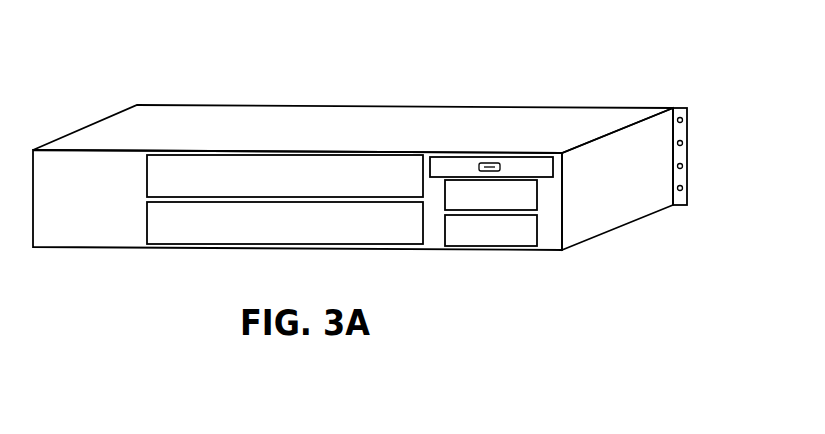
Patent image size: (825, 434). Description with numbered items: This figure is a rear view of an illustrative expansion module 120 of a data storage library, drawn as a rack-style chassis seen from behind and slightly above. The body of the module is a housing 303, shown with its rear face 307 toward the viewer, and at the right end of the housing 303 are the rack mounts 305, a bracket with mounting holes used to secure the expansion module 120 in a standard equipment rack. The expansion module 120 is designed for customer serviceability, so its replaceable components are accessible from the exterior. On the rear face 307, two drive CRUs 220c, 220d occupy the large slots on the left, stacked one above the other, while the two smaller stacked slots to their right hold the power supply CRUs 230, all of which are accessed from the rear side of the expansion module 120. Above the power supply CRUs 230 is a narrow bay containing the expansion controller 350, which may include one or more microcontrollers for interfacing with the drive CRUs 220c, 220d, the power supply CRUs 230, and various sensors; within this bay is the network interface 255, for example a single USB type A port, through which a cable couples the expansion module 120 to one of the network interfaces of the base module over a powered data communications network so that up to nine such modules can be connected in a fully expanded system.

The expansion module 120 is at (628, 68).
The housing 303 is at (113, 117).
The rear face 307 is at (98, 234).
The rack mounts 305 is at (755, 225).
The drive CRU 220c is at (353, 186).
The drive CRU 220d is at (353, 233).
The network interface 255 is at (481, 164).
The expansion controller 350 is at (536, 167).
The power supply CRUs 230 is at (538, 230).